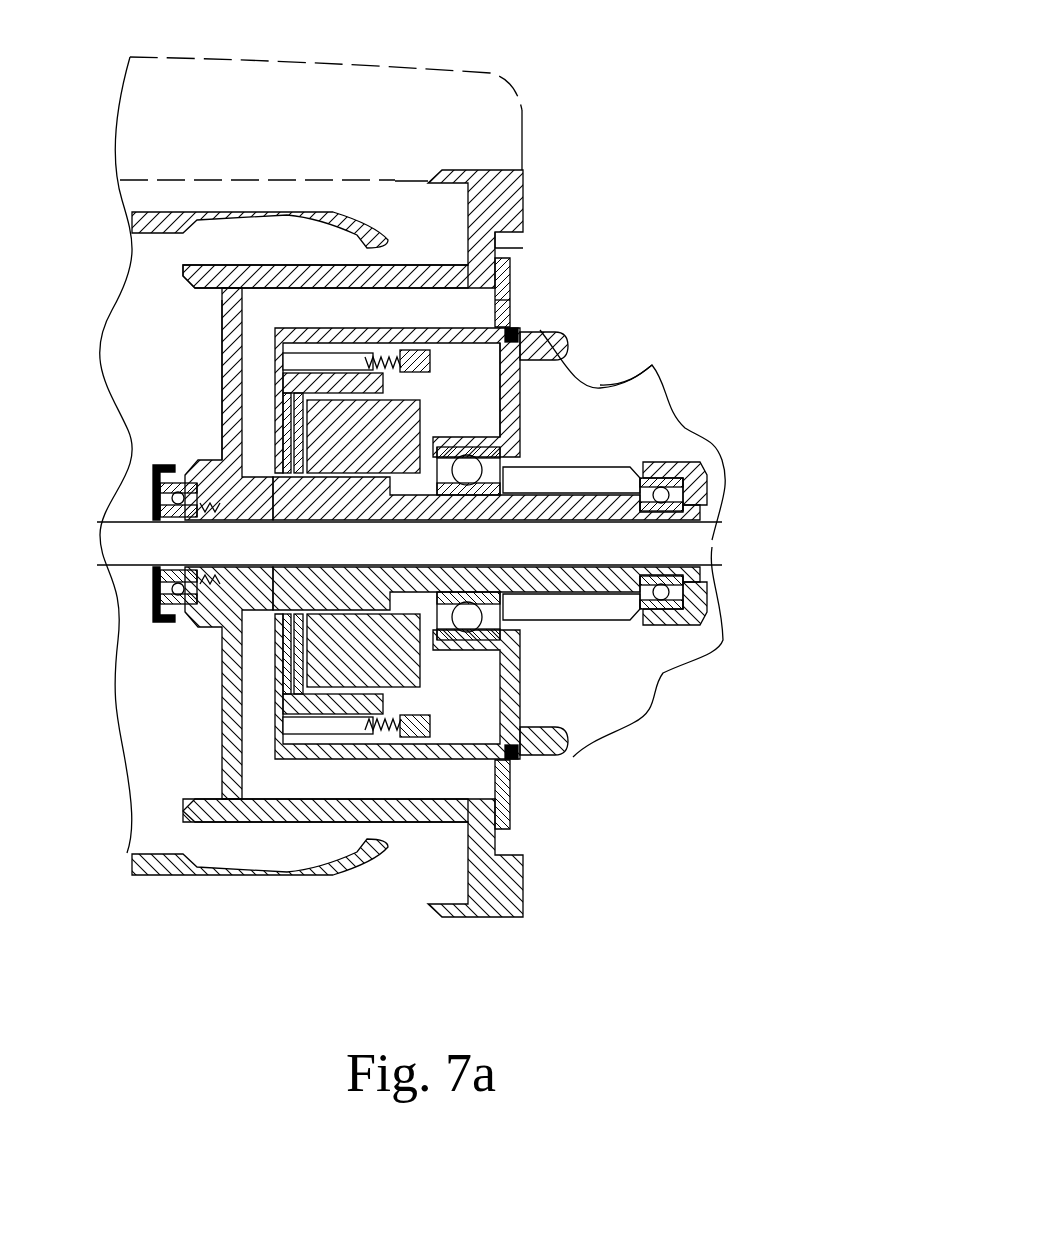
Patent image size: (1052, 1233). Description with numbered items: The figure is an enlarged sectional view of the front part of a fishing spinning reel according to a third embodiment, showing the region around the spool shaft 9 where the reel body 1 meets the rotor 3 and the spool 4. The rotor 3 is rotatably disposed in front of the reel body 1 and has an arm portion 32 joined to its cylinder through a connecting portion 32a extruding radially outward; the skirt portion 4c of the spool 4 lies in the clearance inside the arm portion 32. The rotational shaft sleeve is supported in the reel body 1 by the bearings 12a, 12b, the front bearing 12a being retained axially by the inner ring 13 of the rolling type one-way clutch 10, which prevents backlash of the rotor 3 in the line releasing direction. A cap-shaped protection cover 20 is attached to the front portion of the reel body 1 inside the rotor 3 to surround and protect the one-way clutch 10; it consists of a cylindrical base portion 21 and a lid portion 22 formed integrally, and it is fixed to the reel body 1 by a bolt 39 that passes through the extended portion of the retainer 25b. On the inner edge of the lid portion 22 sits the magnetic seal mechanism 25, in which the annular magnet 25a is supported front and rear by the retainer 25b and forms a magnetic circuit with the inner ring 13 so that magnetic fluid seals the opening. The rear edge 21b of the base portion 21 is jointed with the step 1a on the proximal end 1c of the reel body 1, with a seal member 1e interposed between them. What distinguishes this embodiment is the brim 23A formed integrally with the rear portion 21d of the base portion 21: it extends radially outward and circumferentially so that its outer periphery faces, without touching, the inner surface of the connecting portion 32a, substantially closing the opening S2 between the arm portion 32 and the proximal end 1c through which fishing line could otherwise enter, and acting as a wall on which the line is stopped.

The spool 4 is at (290, 213).
The skirt portion 4c is at (260, 230).
The arm portion 32 is at (523, 188).
The connecting portion 32a is at (496, 247).
The brim 23A is at (511, 277).
The step 1a is at (508, 327).
The rear edge 21b is at (540, 347).
The rear portion 21d is at (496, 348).
The rotor 3 is at (219, 307).
The protection cover 20 is at (305, 322).
The lid portion 22 is at (222, 323).
The inner ring 13 is at (368, 485).
The spool shaft 9 is at (123, 537).
The base portion 21 is at (427, 328).
The bolt 39 is at (328, 360).
The magnetic seal mechanism 25 is at (268, 428).
The magnet 25a is at (282, 398).
The retainer 25b is at (275, 395).
The bearing 12a is at (476, 440).
The bearing 12b is at (672, 480).
The proximal end 1c is at (552, 337).
The reel body 1 is at (632, 543).
The seal member 1e is at (600, 385).
The gap S2 is at (574, 270).
The one-way clutch 10 is at (343, 637).